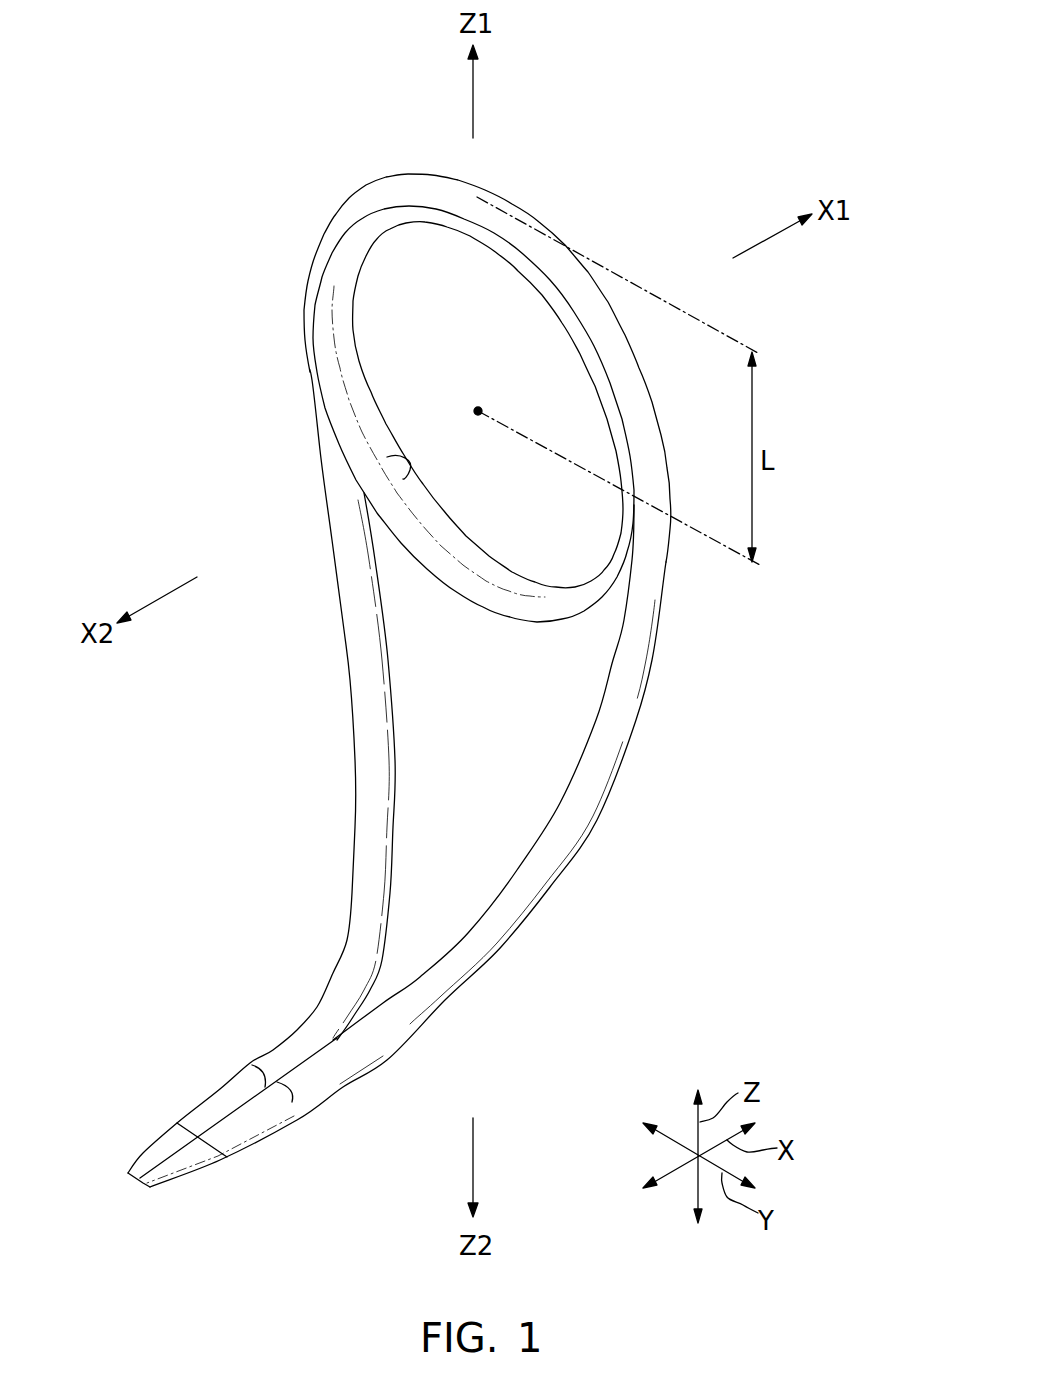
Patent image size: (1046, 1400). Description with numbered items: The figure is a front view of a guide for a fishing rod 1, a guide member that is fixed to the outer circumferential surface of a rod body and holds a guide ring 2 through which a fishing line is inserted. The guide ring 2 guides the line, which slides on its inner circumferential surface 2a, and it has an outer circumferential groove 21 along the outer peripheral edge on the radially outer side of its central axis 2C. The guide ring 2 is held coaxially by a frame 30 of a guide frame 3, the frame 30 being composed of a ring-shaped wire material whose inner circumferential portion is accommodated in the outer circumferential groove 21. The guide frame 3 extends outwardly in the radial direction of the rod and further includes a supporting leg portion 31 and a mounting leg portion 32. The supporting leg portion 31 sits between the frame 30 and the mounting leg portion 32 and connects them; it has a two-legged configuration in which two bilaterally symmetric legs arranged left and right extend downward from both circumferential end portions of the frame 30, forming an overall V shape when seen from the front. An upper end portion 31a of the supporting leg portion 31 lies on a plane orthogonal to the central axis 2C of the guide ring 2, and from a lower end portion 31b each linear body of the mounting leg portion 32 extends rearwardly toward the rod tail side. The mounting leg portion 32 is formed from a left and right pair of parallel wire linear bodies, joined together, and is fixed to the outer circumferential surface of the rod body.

The guide for a fishing rod 1 is at (592, 182).
The guide ring 2 is at (337, 407).
The inner circumferential surface 2a is at (403, 478).
The central axis 2C is at (478, 411).
The guide frame 3 is at (318, 247).
The outer circumferential groove 21 is at (383, 208).
The frame 30 is at (428, 173).
The supporting leg portion 31 is at (613, 787).
The upper end portion 31a is at (643, 632).
The lower end portion 31b is at (390, 1028).
The mounting leg portion 32 is at (258, 1140).